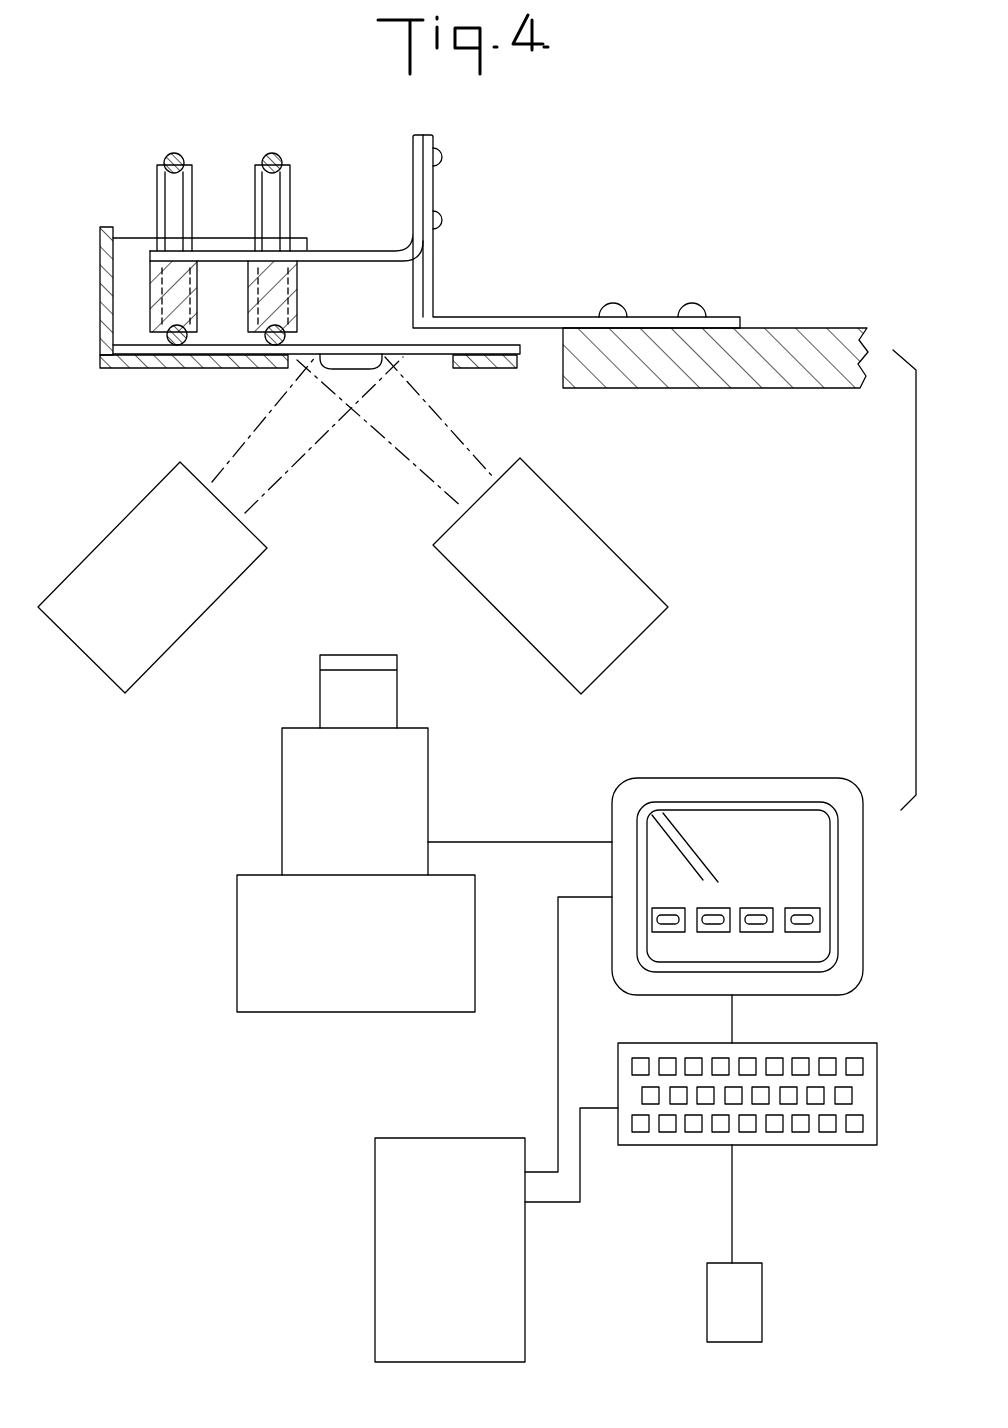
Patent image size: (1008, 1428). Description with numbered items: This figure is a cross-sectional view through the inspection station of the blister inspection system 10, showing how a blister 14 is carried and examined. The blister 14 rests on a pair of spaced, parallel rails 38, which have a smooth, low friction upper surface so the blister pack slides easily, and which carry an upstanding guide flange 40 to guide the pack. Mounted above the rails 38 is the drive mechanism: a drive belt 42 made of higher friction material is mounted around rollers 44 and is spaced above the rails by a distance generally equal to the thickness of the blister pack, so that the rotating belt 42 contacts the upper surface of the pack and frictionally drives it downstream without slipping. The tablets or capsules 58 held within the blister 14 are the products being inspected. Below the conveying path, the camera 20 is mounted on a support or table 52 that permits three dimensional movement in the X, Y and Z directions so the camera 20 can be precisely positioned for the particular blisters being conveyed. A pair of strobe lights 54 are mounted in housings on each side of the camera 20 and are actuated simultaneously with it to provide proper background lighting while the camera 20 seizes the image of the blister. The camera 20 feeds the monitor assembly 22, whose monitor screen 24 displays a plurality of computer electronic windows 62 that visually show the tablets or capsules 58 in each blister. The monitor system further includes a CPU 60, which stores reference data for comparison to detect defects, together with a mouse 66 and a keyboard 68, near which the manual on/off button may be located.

The system 10 is at (697, 278).
The blister 14 is at (367, 347).
The camera 20 is at (410, 763).
The monitor assembly 22 is at (790, 759).
The monitor screen 24 is at (698, 823).
The rails 38 is at (187, 370).
The guide flange 40 is at (101, 346).
The drive belt 42 is at (268, 350).
The rollers 44 is at (252, 180).
The support or table 52 is at (245, 948).
The strobe lights 54 is at (180, 628).
The tablets/capsules 58 is at (364, 375).
The CPU 60 is at (385, 1168).
The computer electronic windows 62 is at (797, 908).
The mouse 66 is at (760, 1268).
The keyboard 68 is at (878, 1043).